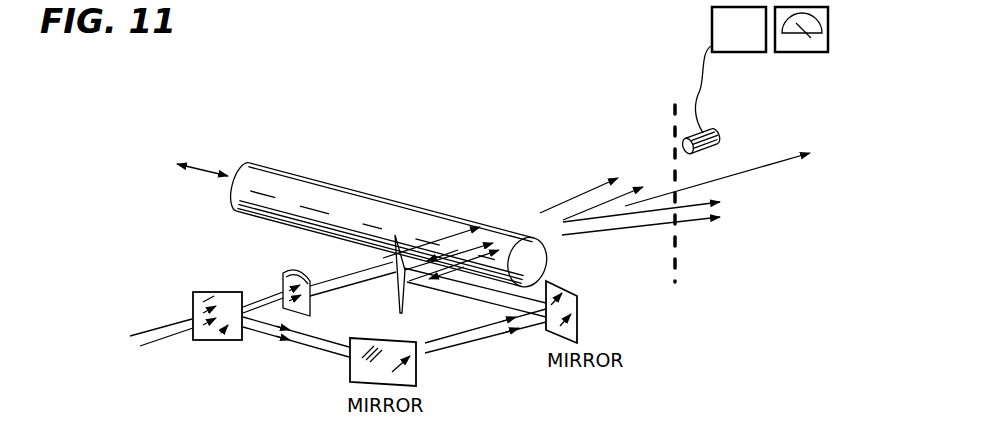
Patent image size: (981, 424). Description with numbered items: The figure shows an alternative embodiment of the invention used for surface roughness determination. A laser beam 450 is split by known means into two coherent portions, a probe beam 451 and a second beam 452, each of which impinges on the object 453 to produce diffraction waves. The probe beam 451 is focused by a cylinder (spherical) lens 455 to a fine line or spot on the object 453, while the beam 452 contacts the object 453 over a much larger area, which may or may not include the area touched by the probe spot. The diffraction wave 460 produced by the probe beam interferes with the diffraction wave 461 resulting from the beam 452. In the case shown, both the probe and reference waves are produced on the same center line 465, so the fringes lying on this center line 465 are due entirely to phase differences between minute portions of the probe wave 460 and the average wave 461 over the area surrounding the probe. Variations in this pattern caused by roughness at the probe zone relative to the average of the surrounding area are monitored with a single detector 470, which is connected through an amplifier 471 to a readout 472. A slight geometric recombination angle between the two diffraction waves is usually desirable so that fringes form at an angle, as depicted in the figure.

The laser beam 450 is at (158, 325).
The probe beam 451 is at (257, 300).
The beam 452 is at (457, 280).
The object 453 is at (549, 262).
The cylinder (spherical) lens 455 is at (293, 266).
The diffraction wave 460 is at (580, 190).
The diffraction wave 461 is at (504, 228).
The center line 465 is at (778, 164).
The detector 470 is at (720, 133).
The amplifier 471 is at (739, 29).
The readout 472 is at (801, 44).